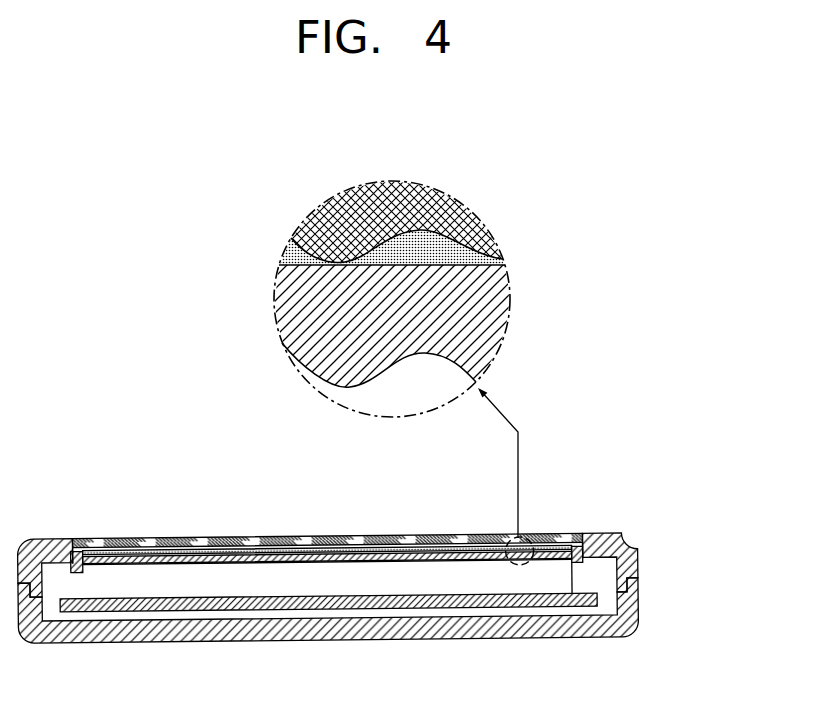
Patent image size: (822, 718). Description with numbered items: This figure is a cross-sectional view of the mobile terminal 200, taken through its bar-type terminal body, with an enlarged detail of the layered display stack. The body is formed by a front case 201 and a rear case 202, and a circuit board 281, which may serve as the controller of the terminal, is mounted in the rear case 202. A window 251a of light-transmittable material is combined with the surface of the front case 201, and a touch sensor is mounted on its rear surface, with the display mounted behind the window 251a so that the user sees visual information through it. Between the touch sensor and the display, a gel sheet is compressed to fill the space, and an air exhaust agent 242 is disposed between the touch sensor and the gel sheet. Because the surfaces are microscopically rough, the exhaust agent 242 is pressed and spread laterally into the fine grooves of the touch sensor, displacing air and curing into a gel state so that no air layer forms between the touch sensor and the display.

The mobile terminal 200 is at (636, 432).
The front case 201 is at (638, 566).
The rear case 202 is at (638, 602).
The air exhaust agent 242 is at (292, 252).
The window 251a is at (148, 537).
The circuit board 281 is at (366, 600).